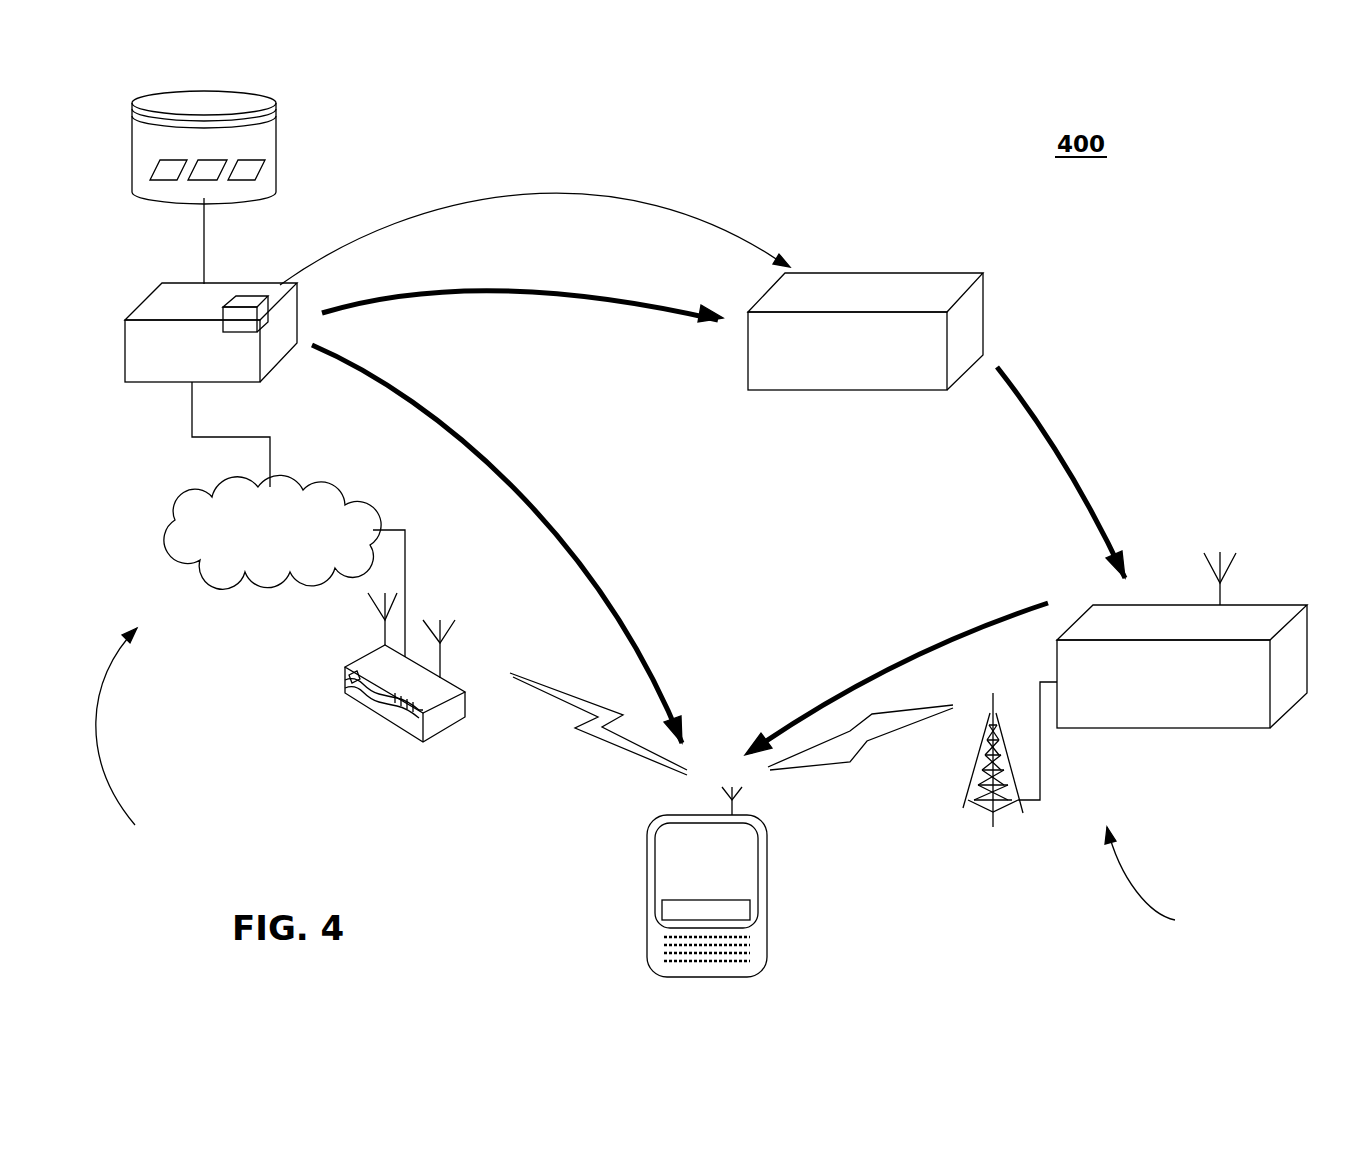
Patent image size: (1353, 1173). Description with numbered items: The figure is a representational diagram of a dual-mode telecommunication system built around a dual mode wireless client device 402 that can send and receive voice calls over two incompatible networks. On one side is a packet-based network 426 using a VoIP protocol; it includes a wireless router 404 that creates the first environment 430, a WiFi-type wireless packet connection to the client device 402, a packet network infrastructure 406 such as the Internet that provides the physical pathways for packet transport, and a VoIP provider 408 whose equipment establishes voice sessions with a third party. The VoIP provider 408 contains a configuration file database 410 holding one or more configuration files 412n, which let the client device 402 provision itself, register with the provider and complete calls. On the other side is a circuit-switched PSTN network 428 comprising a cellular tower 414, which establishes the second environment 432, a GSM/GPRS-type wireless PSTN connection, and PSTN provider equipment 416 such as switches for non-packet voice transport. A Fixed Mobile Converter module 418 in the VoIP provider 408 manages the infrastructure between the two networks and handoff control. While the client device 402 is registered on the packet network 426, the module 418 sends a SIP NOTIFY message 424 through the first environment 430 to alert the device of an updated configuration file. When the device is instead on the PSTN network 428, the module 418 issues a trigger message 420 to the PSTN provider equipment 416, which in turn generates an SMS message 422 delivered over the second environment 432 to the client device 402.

The dual mode wireless client device 402 is at (647, 963).
The wireless router 404 is at (342, 688).
The packet network infrastructure 406 is at (205, 568).
The VoIP provider 408 is at (125, 355).
The configuration file database 410 is at (276, 142).
The configuration files 412n is at (167, 182).
The cellular tower 414 is at (968, 800).
The PSTN provider equipment 416 is at (1162, 728).
The Fixed Mobile Converter module 418 is at (845, 390).
The trigger message 420 is at (470, 288).
The SMS message 422 is at (1017, 607).
The SIP-based NOTIFY message 424 is at (630, 642).
The packet-based network 426 is at (153, 746).
The PSTN network 428 is at (1173, 884).
The first environment 430 is at (592, 733).
The second environment 432 is at (856, 762).